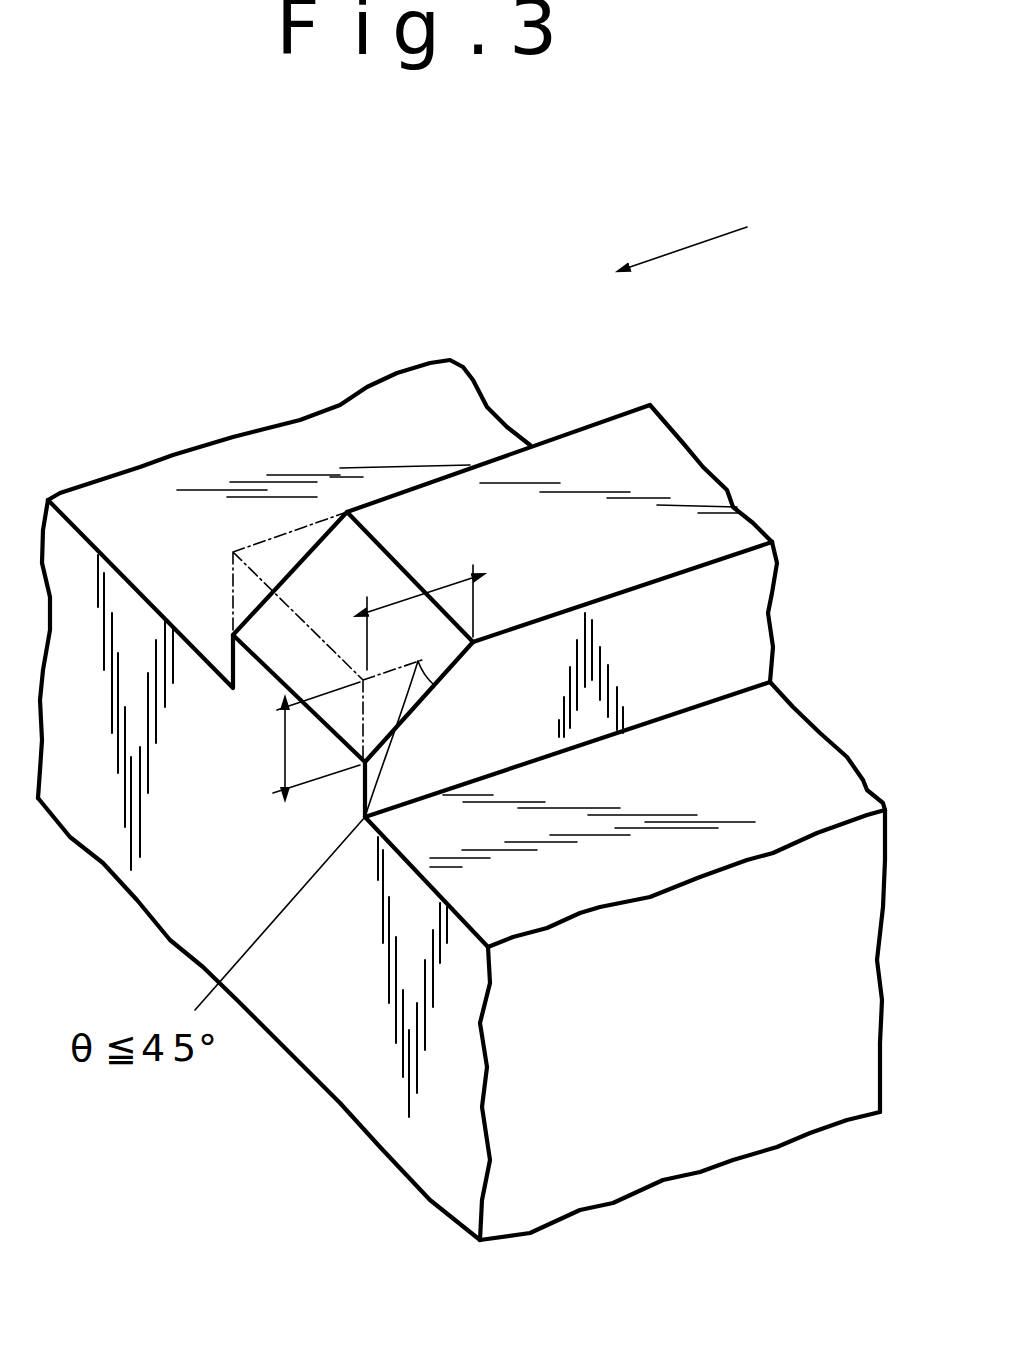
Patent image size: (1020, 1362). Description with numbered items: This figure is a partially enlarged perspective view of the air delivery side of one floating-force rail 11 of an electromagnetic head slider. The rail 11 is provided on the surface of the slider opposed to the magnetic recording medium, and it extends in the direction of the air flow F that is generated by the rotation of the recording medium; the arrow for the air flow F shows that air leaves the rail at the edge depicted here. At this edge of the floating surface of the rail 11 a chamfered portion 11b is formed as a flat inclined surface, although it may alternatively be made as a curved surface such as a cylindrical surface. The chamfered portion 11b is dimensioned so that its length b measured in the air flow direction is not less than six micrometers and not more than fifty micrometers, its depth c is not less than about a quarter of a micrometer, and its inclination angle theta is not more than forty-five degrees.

The rail 11 is at (597, 443).
The chamfered portion 11b is at (320, 566).
The length of the chamfered portion b is at (420, 608).
The depth of the chamfered portion c is at (306, 737).
The air flow F is at (710, 238).